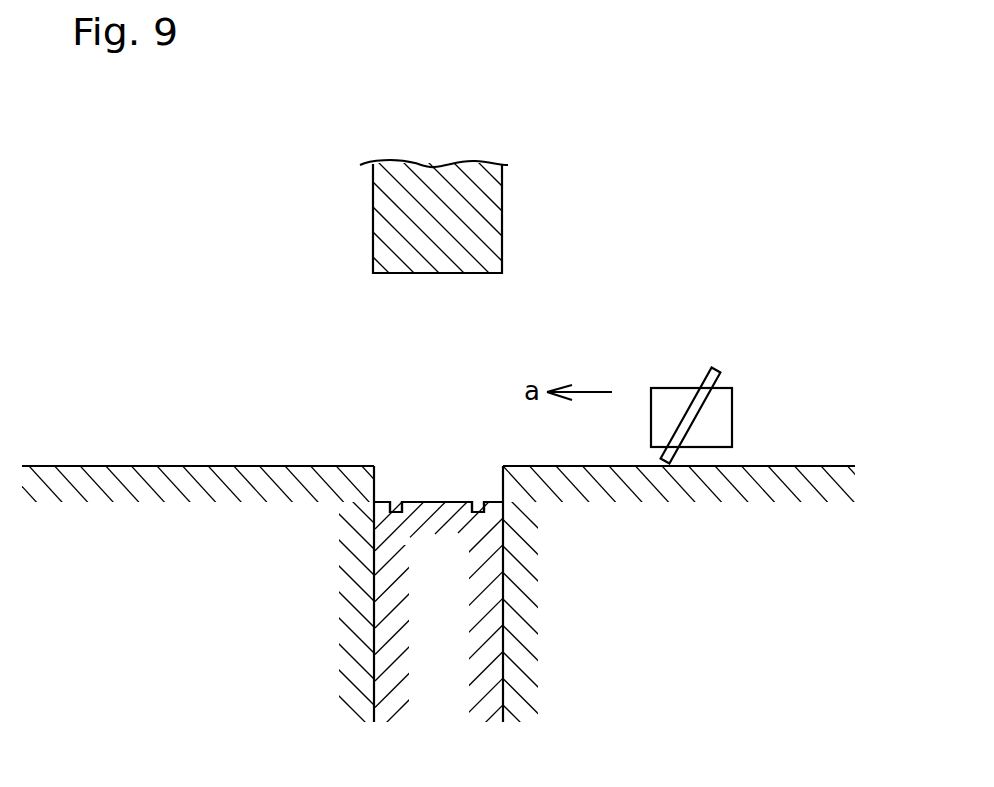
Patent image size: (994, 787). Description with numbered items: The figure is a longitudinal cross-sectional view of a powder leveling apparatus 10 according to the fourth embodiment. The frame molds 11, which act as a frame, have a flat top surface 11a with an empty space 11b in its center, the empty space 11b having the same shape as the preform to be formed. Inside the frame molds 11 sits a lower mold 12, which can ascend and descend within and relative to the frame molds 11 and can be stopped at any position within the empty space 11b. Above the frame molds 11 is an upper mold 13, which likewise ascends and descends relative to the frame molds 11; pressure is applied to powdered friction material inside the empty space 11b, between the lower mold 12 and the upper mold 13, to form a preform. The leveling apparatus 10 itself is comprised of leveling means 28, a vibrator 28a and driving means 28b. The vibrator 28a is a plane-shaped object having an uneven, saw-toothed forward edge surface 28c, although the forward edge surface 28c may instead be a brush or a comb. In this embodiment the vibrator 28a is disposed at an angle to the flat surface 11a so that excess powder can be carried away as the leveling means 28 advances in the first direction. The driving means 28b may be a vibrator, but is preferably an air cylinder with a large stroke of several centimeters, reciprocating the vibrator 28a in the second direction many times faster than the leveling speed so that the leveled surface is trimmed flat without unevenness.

The leveling apparatus 10 is at (278, 311).
The frame mold 11 is at (290, 605).
The flat top surface 11a is at (285, 466).
The empty space 11b is at (443, 482).
The lower mold 12 is at (485, 602).
The upper mold 13 is at (502, 218).
The leveling means 28 is at (706, 296).
The vibrator 28a is at (698, 421).
The driving means 28b is at (671, 388).
The forward edge surface 28c is at (676, 432).